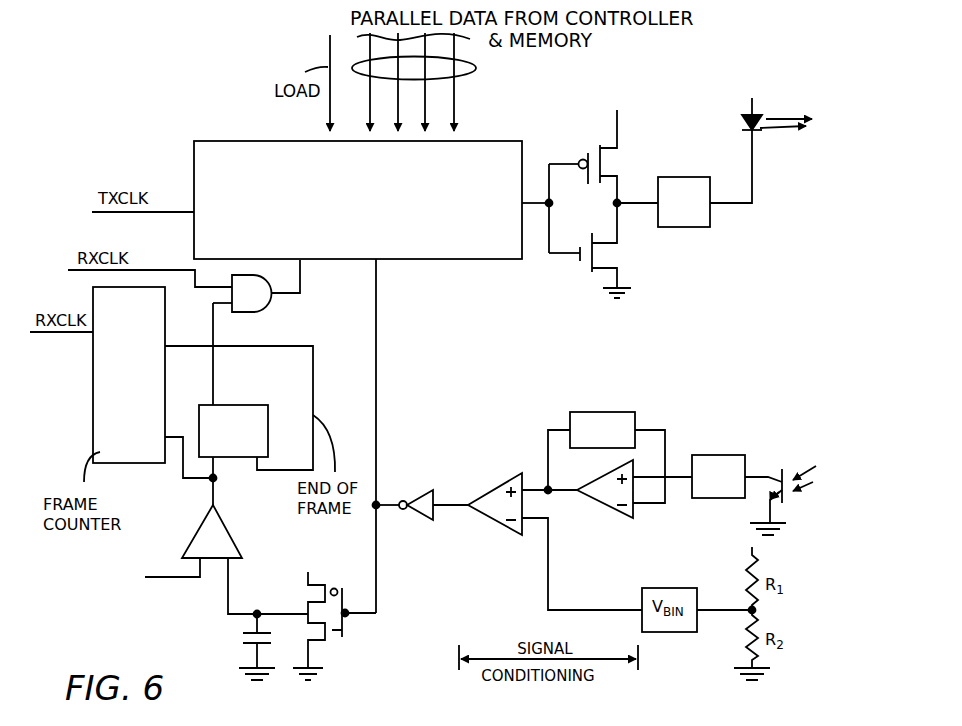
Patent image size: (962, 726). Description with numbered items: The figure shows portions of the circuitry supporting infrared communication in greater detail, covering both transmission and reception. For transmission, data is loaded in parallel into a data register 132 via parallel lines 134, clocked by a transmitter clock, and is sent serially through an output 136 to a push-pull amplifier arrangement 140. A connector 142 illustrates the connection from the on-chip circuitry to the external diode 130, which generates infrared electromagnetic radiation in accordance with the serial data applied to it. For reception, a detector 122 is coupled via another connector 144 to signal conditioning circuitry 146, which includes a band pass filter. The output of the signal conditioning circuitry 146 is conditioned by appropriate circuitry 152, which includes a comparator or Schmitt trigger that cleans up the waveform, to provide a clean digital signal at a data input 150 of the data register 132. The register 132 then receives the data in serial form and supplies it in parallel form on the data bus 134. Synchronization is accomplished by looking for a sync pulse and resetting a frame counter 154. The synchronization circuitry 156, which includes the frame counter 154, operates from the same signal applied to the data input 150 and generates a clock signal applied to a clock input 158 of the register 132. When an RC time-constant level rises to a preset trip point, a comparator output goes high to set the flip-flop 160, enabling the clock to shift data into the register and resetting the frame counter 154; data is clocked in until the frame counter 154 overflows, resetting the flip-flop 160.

The detector 122 is at (773, 470).
The external diode 130 is at (743, 120).
The data register 132 is at (490, 145).
The parallel lines 134 is at (477, 68).
The output 136 is at (533, 207).
The push-pull amplifier arrangement 140 is at (592, 136).
The connector 142 is at (684, 227).
The connector 144 is at (722, 457).
The signal conditioning circuitry 146 is at (567, 412).
The data input 150 is at (376, 262).
The circuitry 152 is at (505, 470).
The frame counter 154 is at (98, 403).
The synchronization circuitry 156 is at (200, 494).
The clock input 158 is at (303, 262).
The flip-flop 160 is at (268, 370).